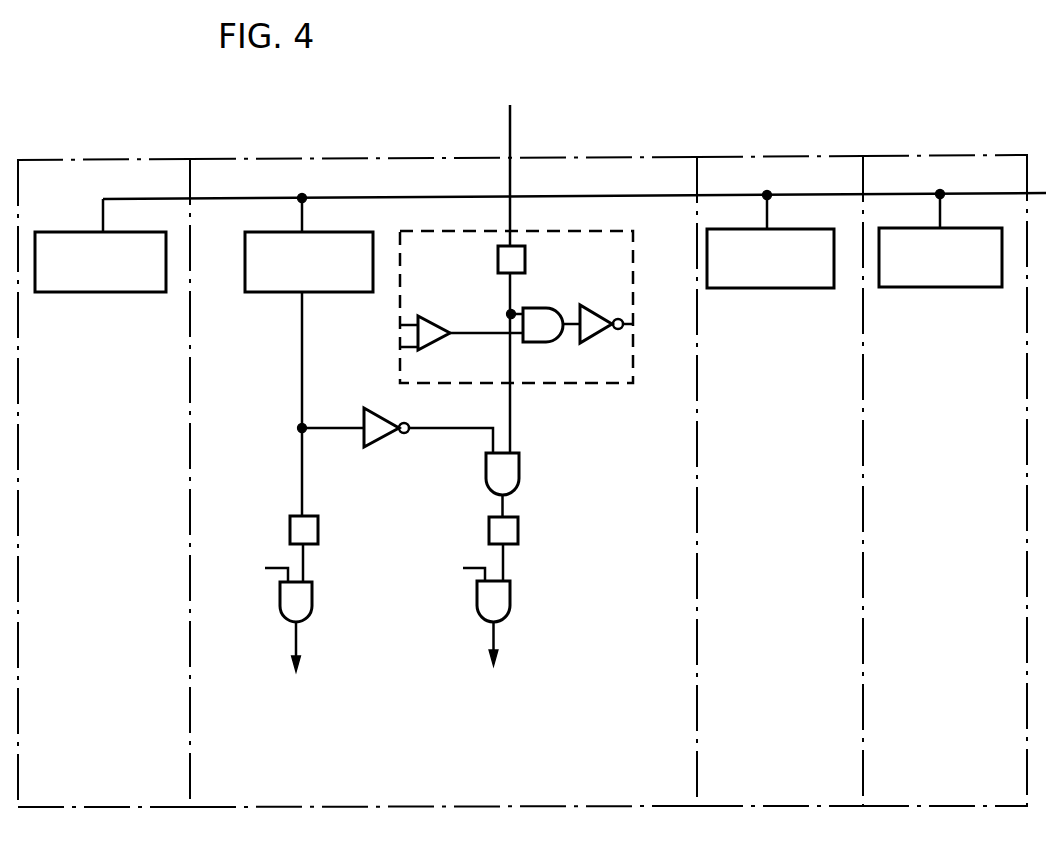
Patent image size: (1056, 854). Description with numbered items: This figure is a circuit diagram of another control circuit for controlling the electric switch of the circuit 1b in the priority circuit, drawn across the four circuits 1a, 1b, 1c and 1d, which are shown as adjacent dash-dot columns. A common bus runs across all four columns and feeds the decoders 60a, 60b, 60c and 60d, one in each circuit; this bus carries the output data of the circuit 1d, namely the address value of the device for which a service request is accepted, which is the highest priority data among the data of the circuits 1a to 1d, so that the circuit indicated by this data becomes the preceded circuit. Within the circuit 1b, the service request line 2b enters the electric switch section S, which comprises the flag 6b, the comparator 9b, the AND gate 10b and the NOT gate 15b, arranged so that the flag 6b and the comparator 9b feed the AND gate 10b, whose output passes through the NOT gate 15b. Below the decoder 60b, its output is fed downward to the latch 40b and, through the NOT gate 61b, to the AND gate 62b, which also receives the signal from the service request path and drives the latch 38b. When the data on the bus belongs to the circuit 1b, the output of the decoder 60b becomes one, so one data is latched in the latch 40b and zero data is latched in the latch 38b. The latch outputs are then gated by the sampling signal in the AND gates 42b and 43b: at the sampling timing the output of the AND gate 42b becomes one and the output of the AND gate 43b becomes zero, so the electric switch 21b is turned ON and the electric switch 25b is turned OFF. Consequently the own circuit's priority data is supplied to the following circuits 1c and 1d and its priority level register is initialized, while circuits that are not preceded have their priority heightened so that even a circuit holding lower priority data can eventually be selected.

The circuit 1a is at (115, 807).
The circuit 1b is at (378, 807).
The circuit 1c is at (765, 806).
The circuit 1d is at (928, 806).
The service request line 2b is at (503, 130).
The flag 6b is at (525, 258).
The comparator 9b is at (437, 318).
The AND gate 10b is at (533, 343).
The NOT gate 15b is at (598, 340).
The electric switch section S is at (605, 232).
The decoder 60a is at (93, 292).
The decoder 60b is at (260, 292).
The decoder 60c is at (774, 288).
The decoder 60d is at (938, 287).
The NOT gate 61b is at (382, 447).
The AND gate 62b is at (519, 470).
The latch 38b is at (518, 527).
The latch 40b is at (318, 526).
The AND gate 42b is at (312, 600).
The AND gate 43b is at (510, 598).
The electric switch 21b is at (330, 704).
The electric switch 25b is at (509, 703).